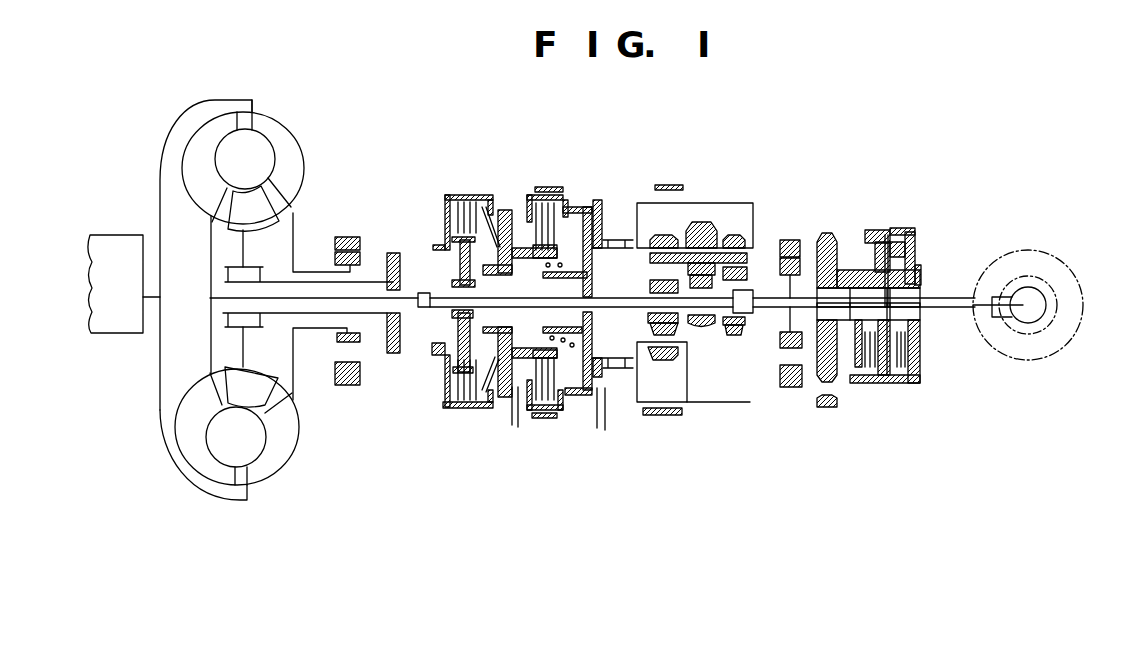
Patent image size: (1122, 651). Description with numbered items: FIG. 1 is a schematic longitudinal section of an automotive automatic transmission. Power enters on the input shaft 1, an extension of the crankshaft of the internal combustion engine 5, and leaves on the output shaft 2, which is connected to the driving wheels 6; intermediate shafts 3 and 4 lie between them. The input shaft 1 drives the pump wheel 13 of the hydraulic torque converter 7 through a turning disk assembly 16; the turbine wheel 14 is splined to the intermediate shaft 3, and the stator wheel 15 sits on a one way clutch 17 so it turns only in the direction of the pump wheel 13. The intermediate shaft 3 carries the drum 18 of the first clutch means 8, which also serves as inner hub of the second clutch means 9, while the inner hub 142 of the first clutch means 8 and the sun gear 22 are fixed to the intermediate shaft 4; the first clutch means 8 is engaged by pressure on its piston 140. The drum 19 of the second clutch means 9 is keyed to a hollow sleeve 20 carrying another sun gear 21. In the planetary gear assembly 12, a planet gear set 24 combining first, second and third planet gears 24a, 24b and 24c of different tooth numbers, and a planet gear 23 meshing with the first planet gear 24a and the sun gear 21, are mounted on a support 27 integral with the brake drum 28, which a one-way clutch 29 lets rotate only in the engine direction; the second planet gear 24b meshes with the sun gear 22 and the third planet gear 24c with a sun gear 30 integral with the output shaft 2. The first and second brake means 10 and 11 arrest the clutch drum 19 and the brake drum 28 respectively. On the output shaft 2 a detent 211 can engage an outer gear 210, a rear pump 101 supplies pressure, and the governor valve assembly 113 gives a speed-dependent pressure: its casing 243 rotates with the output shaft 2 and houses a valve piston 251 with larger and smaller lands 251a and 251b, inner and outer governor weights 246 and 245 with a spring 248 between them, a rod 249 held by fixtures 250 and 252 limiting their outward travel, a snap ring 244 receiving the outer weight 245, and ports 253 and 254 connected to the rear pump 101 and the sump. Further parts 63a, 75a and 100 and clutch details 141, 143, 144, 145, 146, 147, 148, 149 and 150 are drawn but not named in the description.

The input shaft 1 is at (150, 305).
The output shaft 2 is at (766, 298).
The intermediate shaft 3 is at (368, 295).
The intermediate shaft 4 is at (512, 300).
The internal combustion engine 5 is at (108, 246).
The driving wheels 6 is at (1058, 265).
The hydraulic torque converter 7 is at (270, 108).
The first hydraulic friction clutch means 8 is at (497, 196).
The second hydraulic friction clutch means 9 is at (585, 208).
The first hydraulic friction brake means 10 is at (553, 186).
The second hydraulic friction brake means 11 is at (672, 185).
The planetary gear assembly 12 is at (725, 378).
The pump wheel 13 is at (290, 145).
The turbine wheel 14 is at (205, 147).
The stator wheel 15 is at (260, 207).
The turning disk assembly 16 is at (160, 200).
The one way clutch 17 is at (252, 278).
The clutch drum 18 is at (447, 196).
The clutch drum 19 is at (528, 195).
The hollow sleeve 20 is at (610, 308).
The sun gear 21 is at (680, 328).
The sun gear 22 is at (706, 326).
The planet gear 23 is at (661, 361).
The planet gear set 24 is at (726, 230).
The first planet gear 24a is at (660, 236).
The second planet gear 24b is at (725, 228).
The third planet gear 24c is at (742, 238).
The support 27 is at (666, 190).
The brake drum 28 is at (715, 203).
The one-way clutch 29 is at (617, 239).
The sun gear 30 is at (740, 336).
The oil passage 63a is at (515, 428).
The oil passage 75a is at (603, 430).
The bearing 100 is at (348, 235).
The rear pump 101 is at (795, 238).
The governor valve assembly 113 is at (970, 195).
The piston 140 is at (499, 406).
The clutch cover 141 is at (478, 410).
The inner hub 142 is at (452, 262).
The clutch hub 143 is at (446, 382).
The clutch plates 144 is at (448, 398).
The clutch spring 145 is at (480, 202).
The bearing support 146 is at (592, 250).
The clutch flange 147 is at (548, 277).
The bearing 148 is at (549, 420).
The clutch wall 149 is at (556, 411).
The clutch bolt 150 is at (543, 270).
The outer gear 210 is at (835, 385).
The detent 211 is at (817, 402).
The casing 243 is at (920, 345).
The snap ring 244 is at (920, 380).
The outer governor weight 245 is at (920, 322).
The inner governor weight 246 is at (902, 378).
The spring 248 is at (860, 369).
The rod 249 is at (890, 290).
The fixture 250 is at (888, 377).
The valve piston 251 is at (912, 232).
The land 251a is at (916, 246).
The land 251b is at (921, 275).
The fixture 252 is at (888, 235).
The port 253 is at (843, 252).
The port 254 is at (860, 250).